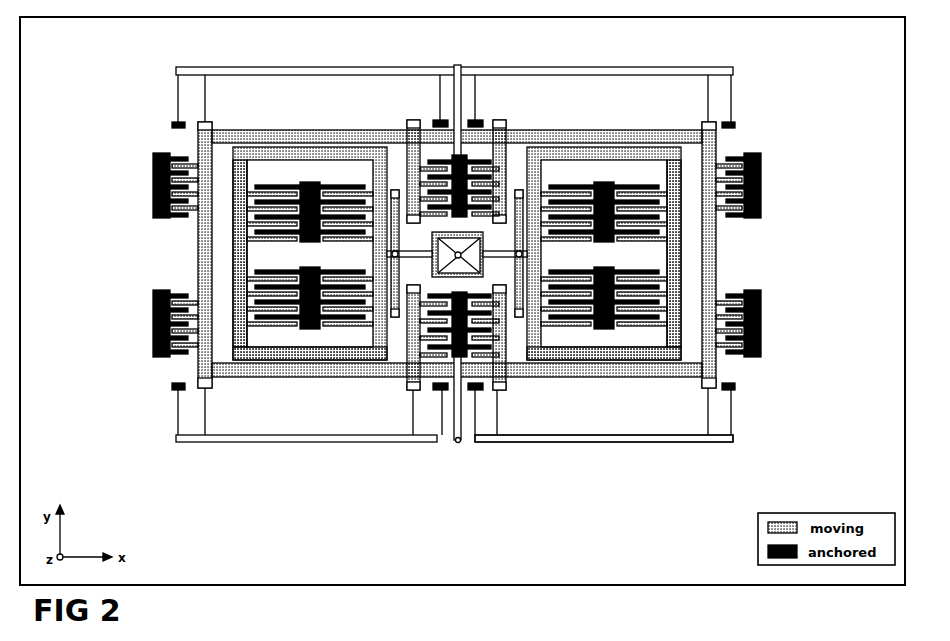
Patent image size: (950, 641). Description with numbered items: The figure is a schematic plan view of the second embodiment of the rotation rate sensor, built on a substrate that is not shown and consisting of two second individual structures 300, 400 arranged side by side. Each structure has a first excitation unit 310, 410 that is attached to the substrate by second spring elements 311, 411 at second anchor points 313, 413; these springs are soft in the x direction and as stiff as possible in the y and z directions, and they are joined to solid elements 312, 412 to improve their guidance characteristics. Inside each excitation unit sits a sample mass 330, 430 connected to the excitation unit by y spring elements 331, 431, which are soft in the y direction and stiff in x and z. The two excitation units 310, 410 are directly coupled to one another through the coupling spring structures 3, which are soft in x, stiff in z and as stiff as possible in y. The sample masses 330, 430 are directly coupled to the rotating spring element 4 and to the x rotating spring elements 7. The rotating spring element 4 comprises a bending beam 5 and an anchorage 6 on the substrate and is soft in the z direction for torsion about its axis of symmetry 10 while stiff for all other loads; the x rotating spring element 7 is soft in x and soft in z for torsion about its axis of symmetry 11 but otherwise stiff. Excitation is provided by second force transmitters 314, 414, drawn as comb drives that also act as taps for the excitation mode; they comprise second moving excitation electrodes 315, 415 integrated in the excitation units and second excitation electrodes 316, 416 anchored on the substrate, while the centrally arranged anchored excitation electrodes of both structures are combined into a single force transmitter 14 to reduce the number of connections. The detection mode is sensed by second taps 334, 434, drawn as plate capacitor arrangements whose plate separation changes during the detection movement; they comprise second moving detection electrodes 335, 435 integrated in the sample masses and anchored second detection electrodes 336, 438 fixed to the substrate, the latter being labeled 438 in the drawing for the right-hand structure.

The coupling spring structure 3 is at (457, 252).
The rotating spring element 4 is at (445, 217).
The bending beam 5 is at (470, 155).
The anchorage 6 is at (487, 213).
The x rotating spring element 7 is at (396, 258).
The axis of symmetry 10 is at (470, 297).
The axis of symmetry 11 is at (443, 320).
The single force transmitter 14 is at (461, 72).
The second individual structure 300 is at (160, 112).
The first excitation unit 310 is at (200, 140).
The second spring element 311 is at (205, 415).
The solid element 312 is at (245, 442).
The second anchor point 313 is at (172, 391).
The second force transmitter 314 is at (145, 312).
The second moving excitation electrode 315 is at (153, 337).
The second excitation electrode 316 is at (153, 353).
The sample mass 330 is at (255, 158).
The y spring element 331 is at (240, 367).
The second tap 334 is at (250, 186).
The second moving detection electrode 335 is at (258, 203).
The second detection electrode 336 is at (242, 212).
The second individual structure 400 is at (752, 112).
The first excitation unit 410 is at (712, 135).
The second spring element 411 is at (478, 385).
The solid element 412 is at (672, 442).
The second anchor point 413 is at (740, 391).
The second force transmitter 414 is at (768, 312).
The second moving excitation electrode 415 is at (761, 337).
The second excitation electrode 416 is at (761, 353).
The sample mass 430 is at (660, 153).
The y spring element 431 is at (675, 367).
The second tap 434 is at (662, 187).
The second moving detection electrode 435 is at (660, 203).
The second Coriolis frame side bar 438 is at (672, 212).